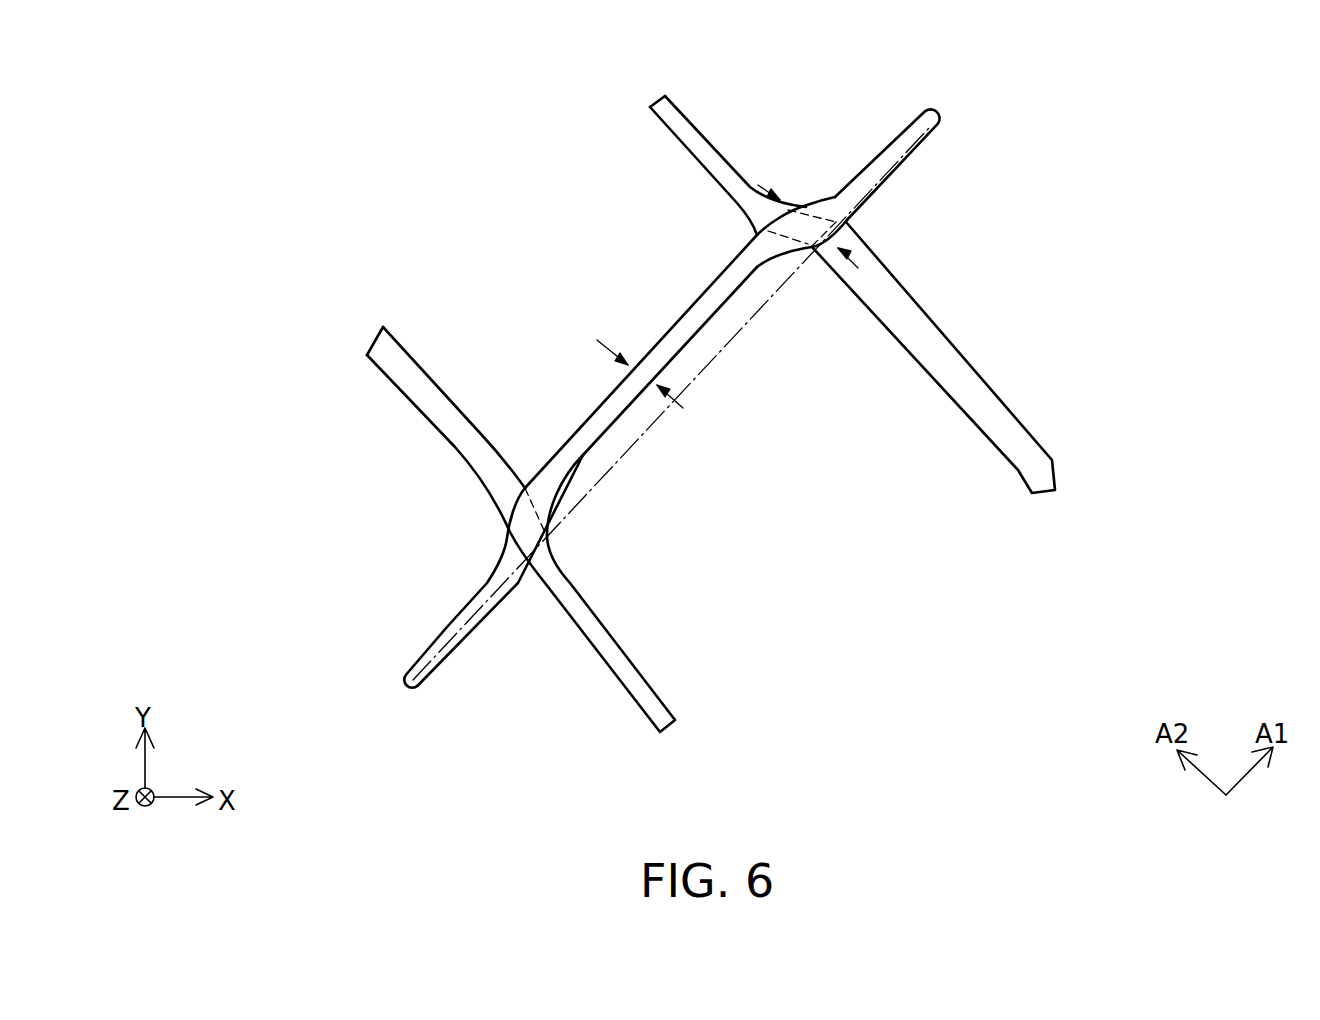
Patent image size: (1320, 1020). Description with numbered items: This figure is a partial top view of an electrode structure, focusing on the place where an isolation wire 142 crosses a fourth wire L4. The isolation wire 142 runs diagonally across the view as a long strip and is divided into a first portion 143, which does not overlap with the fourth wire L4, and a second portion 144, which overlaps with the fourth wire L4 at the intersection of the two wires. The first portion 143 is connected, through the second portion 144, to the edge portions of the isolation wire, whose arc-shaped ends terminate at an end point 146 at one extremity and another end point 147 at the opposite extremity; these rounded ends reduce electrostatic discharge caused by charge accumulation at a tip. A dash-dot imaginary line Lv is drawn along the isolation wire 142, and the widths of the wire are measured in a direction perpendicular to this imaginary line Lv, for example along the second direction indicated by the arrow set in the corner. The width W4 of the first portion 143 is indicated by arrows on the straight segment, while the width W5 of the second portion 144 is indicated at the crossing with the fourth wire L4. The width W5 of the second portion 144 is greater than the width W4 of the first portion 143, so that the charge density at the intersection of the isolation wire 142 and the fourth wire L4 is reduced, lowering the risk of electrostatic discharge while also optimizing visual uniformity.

The isolation wire 142 is at (570, 270).
The first portion 143 is at (590, 428).
The second portion 144 is at (812, 248).
The end point 146 is at (412, 690).
The end point 147 is at (933, 110).
The fourth wire L4 is at (712, 175).
The imaginary line Lv is at (460, 633).
The width of the first portion W4 is at (616, 368).
The width of the second portion W5 is at (812, 246).